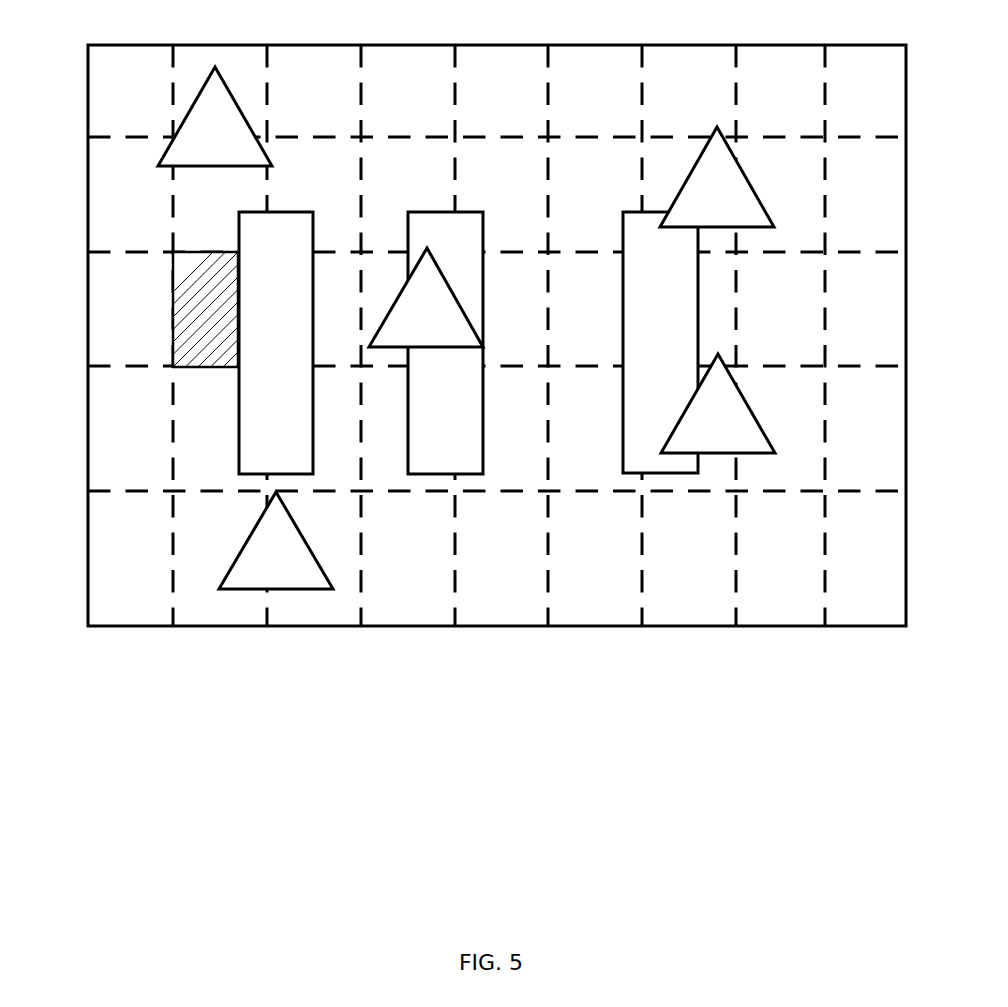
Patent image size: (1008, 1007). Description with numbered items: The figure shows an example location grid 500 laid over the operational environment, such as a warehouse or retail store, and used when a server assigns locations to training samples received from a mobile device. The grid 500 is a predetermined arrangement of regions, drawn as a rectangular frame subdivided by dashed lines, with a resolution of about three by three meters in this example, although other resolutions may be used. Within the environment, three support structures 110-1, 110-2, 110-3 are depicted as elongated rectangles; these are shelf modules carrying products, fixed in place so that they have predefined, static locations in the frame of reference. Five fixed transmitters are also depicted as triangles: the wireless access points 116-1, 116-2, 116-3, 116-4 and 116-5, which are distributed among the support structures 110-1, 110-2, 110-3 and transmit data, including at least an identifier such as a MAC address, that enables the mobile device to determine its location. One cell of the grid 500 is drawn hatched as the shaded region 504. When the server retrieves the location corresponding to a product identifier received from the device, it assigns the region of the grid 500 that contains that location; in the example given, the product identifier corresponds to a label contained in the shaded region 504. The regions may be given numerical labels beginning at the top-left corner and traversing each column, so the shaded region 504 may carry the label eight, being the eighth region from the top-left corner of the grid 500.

The grid 500 is at (176, 81).
The shaded region 504 is at (190, 315).
The support structure 110-1 is at (313, 403).
The support structure 110-2 is at (497, 198).
The support structure 110-3 is at (698, 318).
The access point 116-1 is at (186, 145).
The access point 116-2 is at (247, 570).
The access point 116-3 is at (398, 327).
The access point 116-4 is at (688, 205).
The access point 116-5 is at (689, 432).